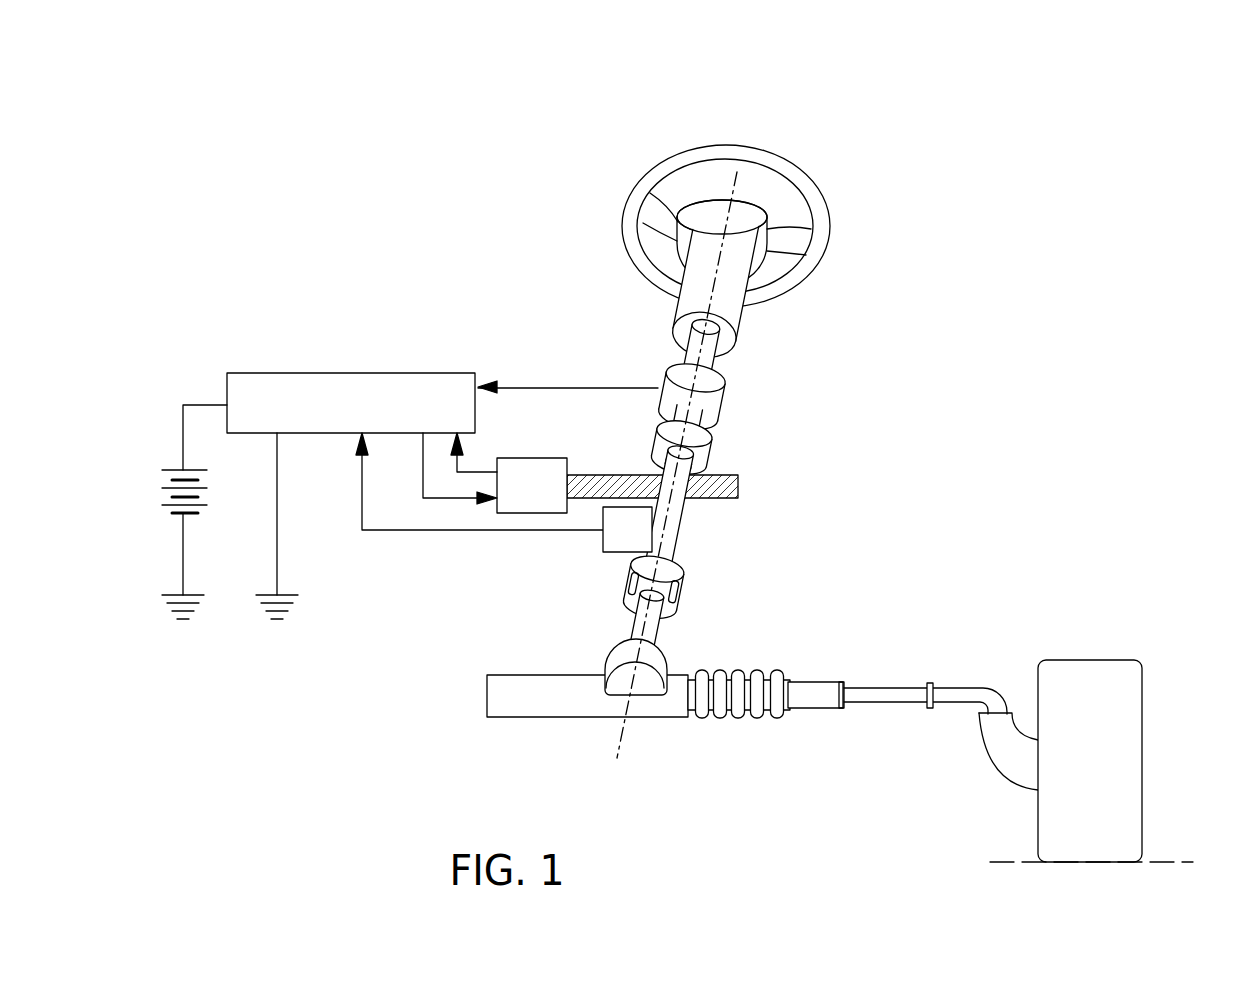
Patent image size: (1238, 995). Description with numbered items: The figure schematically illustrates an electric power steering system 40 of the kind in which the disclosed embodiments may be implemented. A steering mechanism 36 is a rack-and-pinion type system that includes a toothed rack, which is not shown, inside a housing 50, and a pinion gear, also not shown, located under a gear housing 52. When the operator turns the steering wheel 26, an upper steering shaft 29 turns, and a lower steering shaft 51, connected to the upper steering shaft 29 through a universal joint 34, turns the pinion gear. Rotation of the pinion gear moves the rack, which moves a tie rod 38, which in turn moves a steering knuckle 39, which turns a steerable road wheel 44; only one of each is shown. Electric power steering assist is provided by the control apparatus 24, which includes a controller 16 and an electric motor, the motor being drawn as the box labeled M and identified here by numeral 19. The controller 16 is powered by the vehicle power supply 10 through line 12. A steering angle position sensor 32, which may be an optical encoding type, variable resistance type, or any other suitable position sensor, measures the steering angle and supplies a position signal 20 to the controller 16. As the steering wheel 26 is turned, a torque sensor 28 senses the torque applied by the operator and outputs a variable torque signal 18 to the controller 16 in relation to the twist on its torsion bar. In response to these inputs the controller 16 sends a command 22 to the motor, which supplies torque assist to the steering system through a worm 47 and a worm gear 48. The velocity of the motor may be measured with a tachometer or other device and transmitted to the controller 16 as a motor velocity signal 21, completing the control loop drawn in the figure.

The vehicle power supply 10 is at (162, 497).
The line 12 is at (197, 401).
The controller 16 is at (362, 372).
The variable torque signal 18 is at (578, 386).
The motor 19 is at (540, 458).
The position signal 20 is at (490, 532).
The motor velocity signal 21 is at (485, 471).
The command 22 is at (440, 503).
The control apparatus 24 is at (913, 378).
The steering wheel 26 is at (780, 176).
The torque sensor 28 is at (713, 390).
The upper steering shaft 29 is at (692, 356).
The steering angle position sensor 32 is at (602, 541).
The universal joint 34 is at (680, 584).
The steering mechanism 36 is at (765, 666).
The tie rod 38 is at (882, 703).
The steering knuckle 39 is at (1007, 750).
The electric power steering system 40 is at (996, 479).
The steerable road wheel 44 is at (1078, 676).
The worm 47 is at (728, 489).
The worm gear 48 is at (693, 449).
The housing 50 is at (527, 705).
The lower steering shaft 51 is at (655, 632).
The gear housing 52 is at (616, 658).